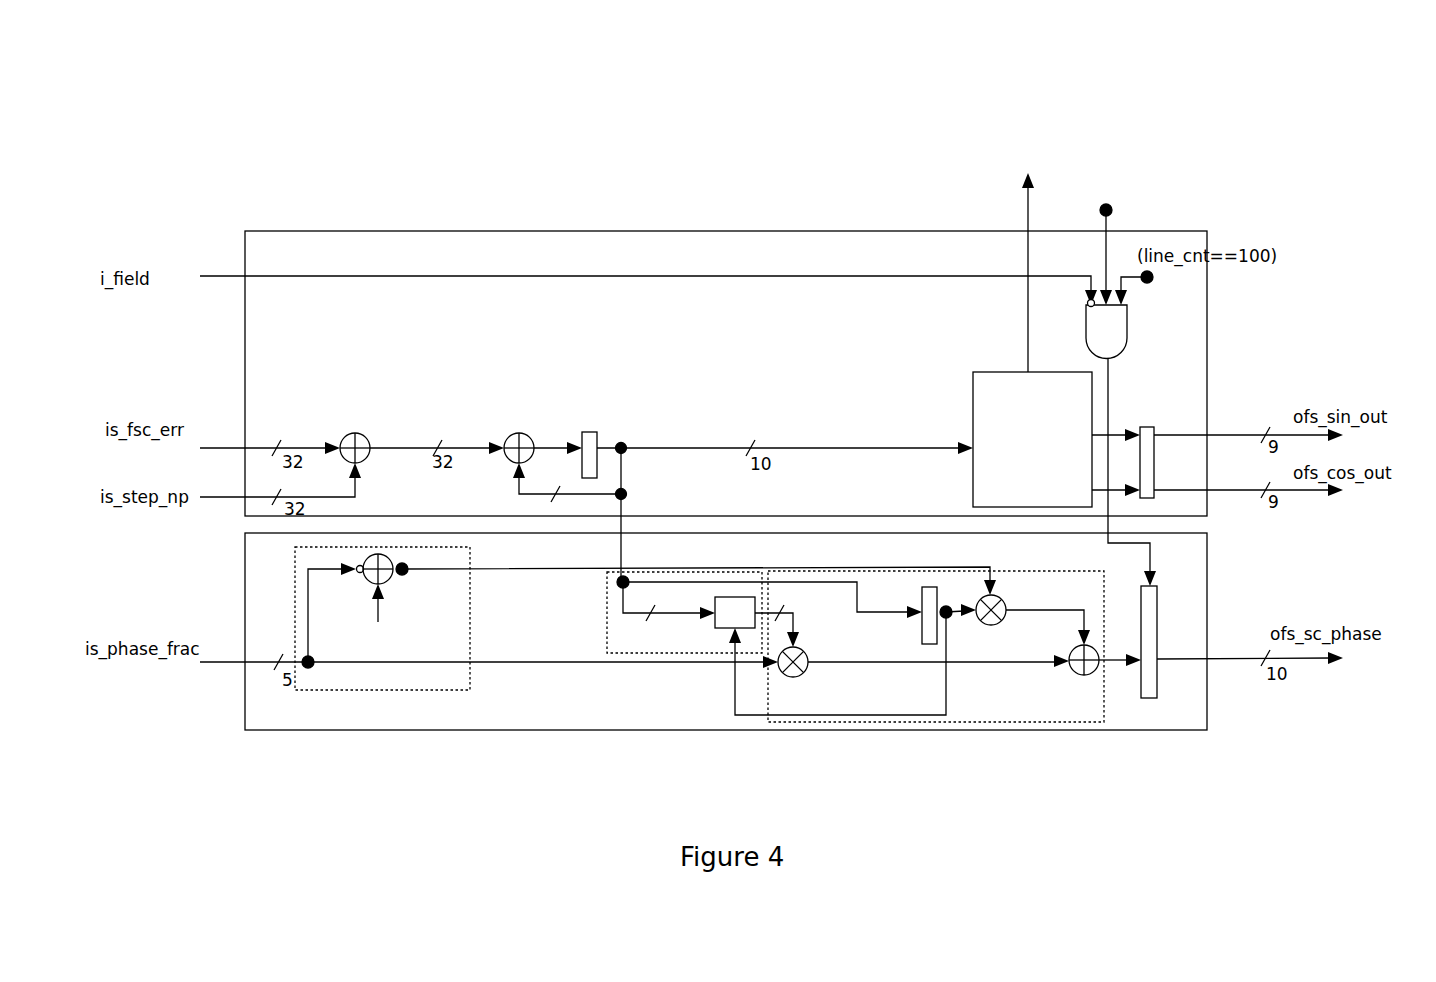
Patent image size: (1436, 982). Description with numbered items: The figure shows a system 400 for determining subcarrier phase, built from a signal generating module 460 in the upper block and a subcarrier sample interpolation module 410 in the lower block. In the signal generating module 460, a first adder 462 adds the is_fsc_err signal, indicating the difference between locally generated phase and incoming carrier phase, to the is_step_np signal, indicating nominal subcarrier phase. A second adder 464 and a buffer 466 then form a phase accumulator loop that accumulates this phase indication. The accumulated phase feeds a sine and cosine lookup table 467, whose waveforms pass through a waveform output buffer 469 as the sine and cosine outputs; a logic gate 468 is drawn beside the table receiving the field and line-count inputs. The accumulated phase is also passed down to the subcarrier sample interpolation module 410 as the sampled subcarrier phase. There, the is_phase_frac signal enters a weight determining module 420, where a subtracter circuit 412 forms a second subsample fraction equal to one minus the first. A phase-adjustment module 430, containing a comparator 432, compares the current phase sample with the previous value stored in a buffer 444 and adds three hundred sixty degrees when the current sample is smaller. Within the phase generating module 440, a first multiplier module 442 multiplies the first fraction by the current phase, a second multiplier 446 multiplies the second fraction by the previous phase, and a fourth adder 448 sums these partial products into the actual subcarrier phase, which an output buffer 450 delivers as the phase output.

The system for determining subcarrier phase 400 is at (170, 122).
The signal generating module 460 is at (245, 250).
The first adder 462 is at (350, 433).
The second adder 464 is at (512, 433).
The buffer 466 is at (589, 430).
The sine & cosine lookup table 467 is at (985, 372).
The AND gate 468 is at (1127, 330).
The waveform output buffer 469 is at (1147, 427).
The subcarrier sample interpolation module 410 is at (245, 590).
The subtracter circuit 412 is at (390, 581).
The weight determining module 420 is at (470, 632).
The phase-adjustment module 430 is at (607, 603).
The comparator 432 is at (715, 625).
The phase generating module 440 is at (807, 722).
The first multiplier module 442 is at (806, 674).
The buffer 444 is at (922, 636).
The second multiplier 446 is at (1003, 622).
The fourth adder 448 is at (1078, 676).
The output buffer 450 is at (1157, 606).